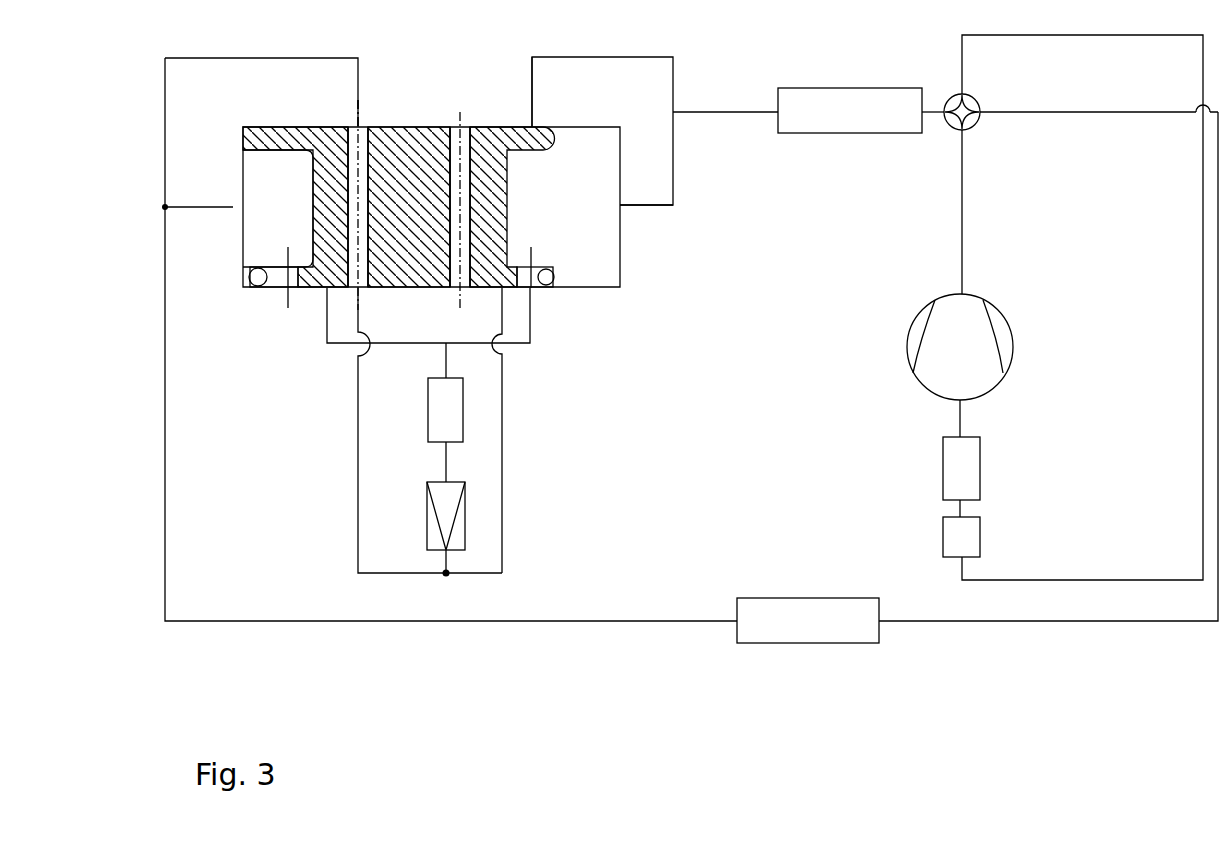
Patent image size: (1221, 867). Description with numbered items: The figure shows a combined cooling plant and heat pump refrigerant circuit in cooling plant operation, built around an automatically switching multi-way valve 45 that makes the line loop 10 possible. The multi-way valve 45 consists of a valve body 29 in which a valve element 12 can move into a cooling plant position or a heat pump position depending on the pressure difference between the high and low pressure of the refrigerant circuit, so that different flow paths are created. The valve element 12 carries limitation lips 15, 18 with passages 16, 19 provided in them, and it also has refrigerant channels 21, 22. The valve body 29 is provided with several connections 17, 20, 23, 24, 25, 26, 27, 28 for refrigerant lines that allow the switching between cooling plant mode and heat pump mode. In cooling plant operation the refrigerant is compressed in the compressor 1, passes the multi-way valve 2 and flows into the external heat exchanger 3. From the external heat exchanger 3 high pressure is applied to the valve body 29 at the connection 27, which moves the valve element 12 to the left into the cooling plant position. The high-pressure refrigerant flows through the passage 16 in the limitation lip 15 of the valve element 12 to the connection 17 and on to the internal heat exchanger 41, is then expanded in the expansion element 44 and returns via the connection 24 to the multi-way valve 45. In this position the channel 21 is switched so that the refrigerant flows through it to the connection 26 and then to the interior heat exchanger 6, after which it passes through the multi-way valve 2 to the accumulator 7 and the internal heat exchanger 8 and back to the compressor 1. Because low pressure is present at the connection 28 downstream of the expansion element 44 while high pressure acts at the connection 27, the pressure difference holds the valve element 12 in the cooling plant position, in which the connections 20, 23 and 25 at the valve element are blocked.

The compressor 1 is at (998, 340).
The multi-way valve 2 is at (950, 95).
The external heat exchanger 3 is at (810, 112).
The interior heat exchanger 6 is at (840, 643).
The accumulator 7 is at (962, 535).
The internal heat exchanger 8 is at (962, 465).
The line loop 10 is at (446, 463).
The valve element 12 is at (316, 136).
The limitation lip 15 is at (551, 275).
The passage 16 is at (531, 280).
The connection 17 is at (530, 313).
The limitation lip 18 is at (258, 280).
The passage 19 is at (283, 280).
The connection 20 is at (327, 313).
The refrigerant channel 21 is at (358, 147).
The refrigerant channel 22 is at (463, 137).
The connection 23 is at (503, 308).
The connection 24 is at (358, 313).
The connection 25 is at (532, 108).
The connection 26 is at (358, 108).
The connection 27 is at (643, 205).
The connection 28 is at (233, 207).
The valve body 29 is at (238, 170).
The internal heat exchanger 41 is at (463, 410).
The expansion element 44 is at (446, 510).
The multi-way valve 45 is at (413, 122).